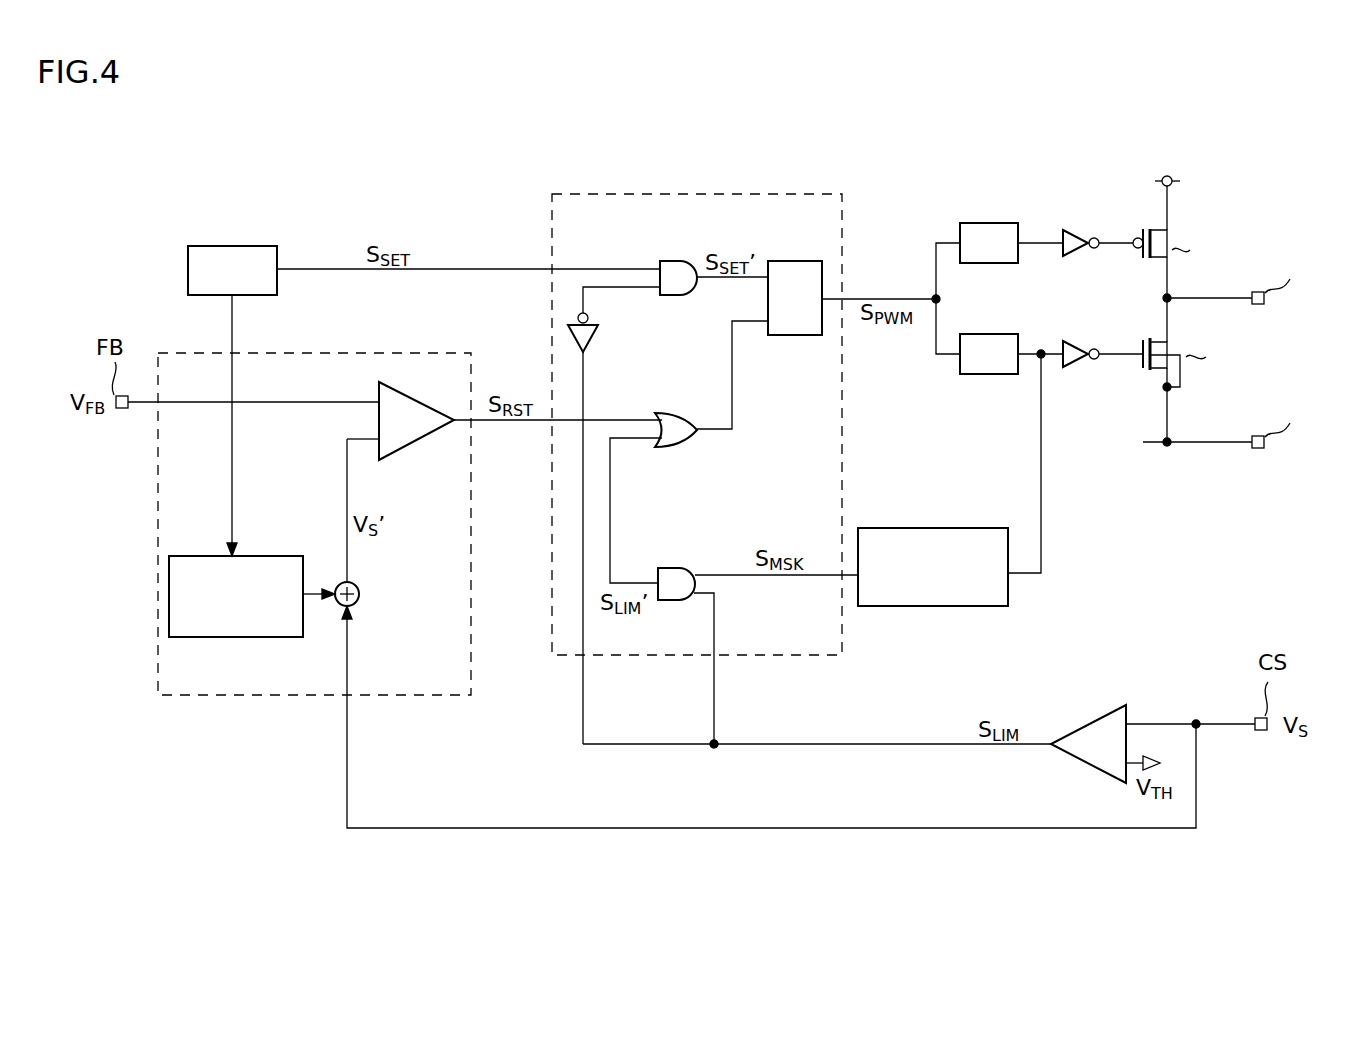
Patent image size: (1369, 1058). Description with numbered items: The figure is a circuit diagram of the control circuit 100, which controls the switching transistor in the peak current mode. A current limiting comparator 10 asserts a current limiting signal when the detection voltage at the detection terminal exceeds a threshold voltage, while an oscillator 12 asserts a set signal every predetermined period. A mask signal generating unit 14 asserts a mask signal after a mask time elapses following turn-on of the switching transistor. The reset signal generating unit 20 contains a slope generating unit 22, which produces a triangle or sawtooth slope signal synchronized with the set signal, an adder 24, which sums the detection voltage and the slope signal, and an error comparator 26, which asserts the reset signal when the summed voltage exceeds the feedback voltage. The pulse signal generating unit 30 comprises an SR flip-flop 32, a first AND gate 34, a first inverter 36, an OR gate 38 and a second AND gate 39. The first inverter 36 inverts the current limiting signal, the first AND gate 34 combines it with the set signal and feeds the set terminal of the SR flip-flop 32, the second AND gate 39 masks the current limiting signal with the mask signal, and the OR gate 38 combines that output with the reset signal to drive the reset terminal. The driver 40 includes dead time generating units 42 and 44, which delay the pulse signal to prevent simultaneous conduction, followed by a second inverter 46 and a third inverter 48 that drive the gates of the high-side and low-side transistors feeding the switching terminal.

The current limiting comparator 10 is at (1080, 760).
The oscillator 12 is at (249, 246).
The mask signal generating unit 14 is at (958, 606).
The reset signal generating unit 20 is at (278, 695).
The slope generating unit 22 is at (250, 637).
The adder 24 is at (359, 594).
The error comparator 26 is at (428, 434).
The pulse signal generating unit 30 is at (710, 194).
The SR flip-flop 32 is at (790, 335).
The first AND gate 34 is at (668, 261).
The first inverter 36 is at (591, 334).
The OR gate 38 is at (663, 413).
The second AND gate 39 is at (680, 568).
The driver 40 is at (1195, 466).
The dead time generating unit 42 is at (988, 223).
The dead time generating unit 44 is at (995, 374).
The second inverter 46 is at (1076, 232).
The third inverter 48 is at (1076, 343).
The control circuit 100 is at (735, 901).